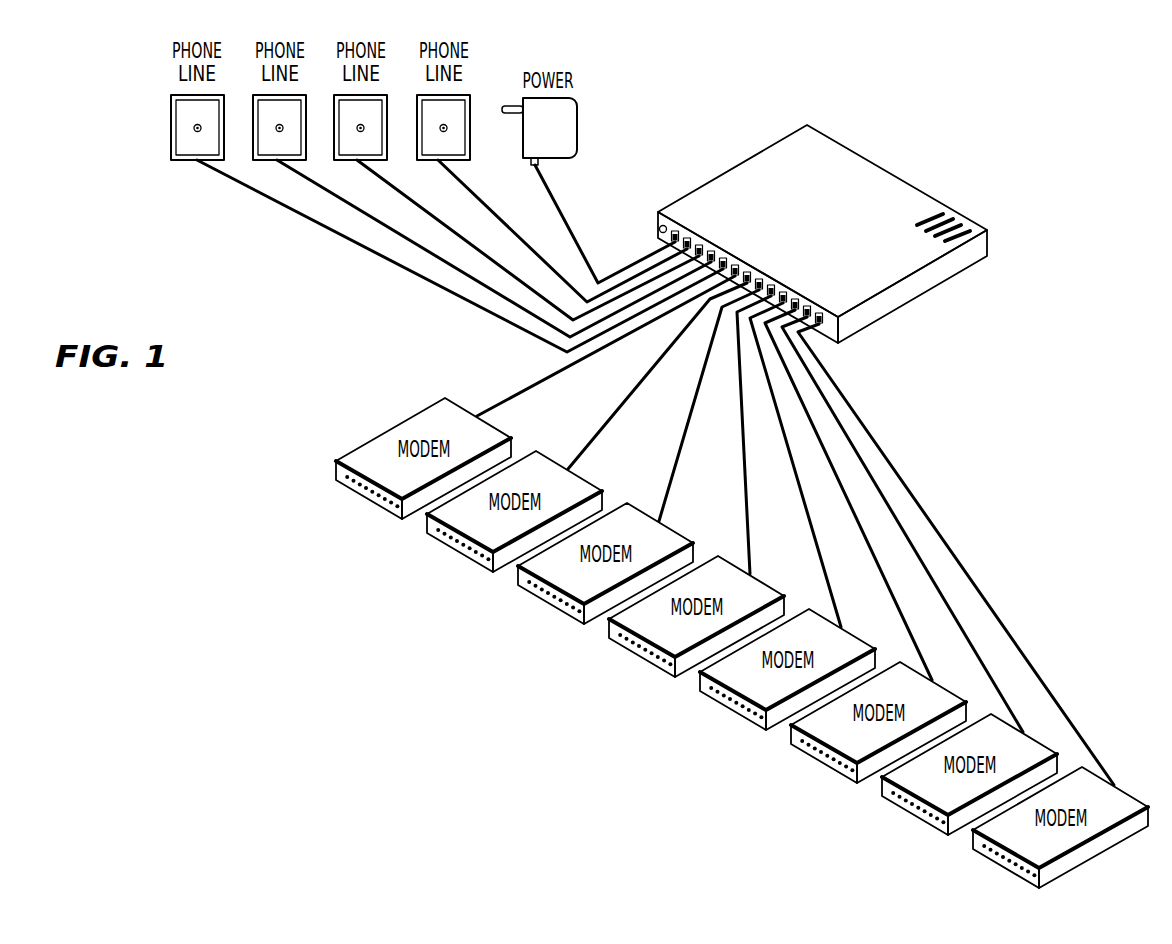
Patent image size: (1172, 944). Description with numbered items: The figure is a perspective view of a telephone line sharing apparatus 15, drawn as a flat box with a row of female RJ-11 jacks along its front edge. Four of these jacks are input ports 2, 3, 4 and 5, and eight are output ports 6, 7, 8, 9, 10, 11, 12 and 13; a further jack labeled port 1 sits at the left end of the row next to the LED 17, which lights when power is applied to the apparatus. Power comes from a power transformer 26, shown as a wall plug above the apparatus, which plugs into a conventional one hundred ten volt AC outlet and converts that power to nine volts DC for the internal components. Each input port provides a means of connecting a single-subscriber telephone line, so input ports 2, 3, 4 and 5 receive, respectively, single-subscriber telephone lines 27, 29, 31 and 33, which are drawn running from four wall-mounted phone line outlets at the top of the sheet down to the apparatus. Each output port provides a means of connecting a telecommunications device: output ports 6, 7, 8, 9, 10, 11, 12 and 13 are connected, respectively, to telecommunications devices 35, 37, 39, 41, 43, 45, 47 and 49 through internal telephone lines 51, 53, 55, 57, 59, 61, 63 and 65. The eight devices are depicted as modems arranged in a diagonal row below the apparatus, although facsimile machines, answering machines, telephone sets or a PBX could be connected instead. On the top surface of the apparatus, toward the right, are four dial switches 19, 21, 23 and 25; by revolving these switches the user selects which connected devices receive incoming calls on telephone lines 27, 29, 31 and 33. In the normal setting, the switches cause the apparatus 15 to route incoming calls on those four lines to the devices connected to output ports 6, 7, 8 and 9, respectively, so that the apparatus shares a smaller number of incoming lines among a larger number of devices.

The telephone jack 1 is at (677, 230).
The input port 2 is at (689, 237).
The input port 3 is at (701, 244).
The input port 4 is at (713, 250).
The input port 5 is at (725, 257).
The output port 6 is at (737, 264).
The output port 7 is at (749, 271).
The output port 8 is at (761, 278).
The output port 9 is at (773, 285).
The output port 10 is at (785, 291).
The output port 11 is at (797, 298).
The output port 12 is at (809, 305).
The output port 13 is at (821, 312).
The telephone line sharing apparatus 15 is at (900, 200).
The LED 17 is at (660, 225).
The dial switch 19 is at (933, 212).
The dial switch 21 is at (953, 217).
The dial switch 23 is at (968, 223).
The dial switch 25 is at (982, 228).
The power transformer 26 is at (579, 131).
The single-subscriber telephone line 27 is at (480, 202).
The single-subscriber telephone line 29 is at (400, 197).
The single-subscriber telephone line 31 is at (318, 190).
The single-subscriber telephone line 33 is at (313, 225).
The telecommunications device 35 is at (362, 498).
The telecommunications device 37 is at (453, 551).
The telecommunications device 39 is at (544, 603).
The telecommunications device 41 is at (635, 656).
The telecommunications device 43 is at (726, 709).
The telecommunications device 45 is at (817, 762).
The telecommunications device 47 is at (908, 814).
The telecommunications device 49 is at (1008, 868).
The internal telephone line 51 is at (537, 385).
The internal telephone line 53 is at (618, 413).
The internal telephone line 55 is at (679, 477).
The internal telephone line 57 is at (750, 530).
The internal telephone line 59 is at (830, 585).
The internal telephone line 61 is at (912, 633).
The internal telephone line 63 is at (982, 660).
The internal telephone line 65 is at (1063, 708).